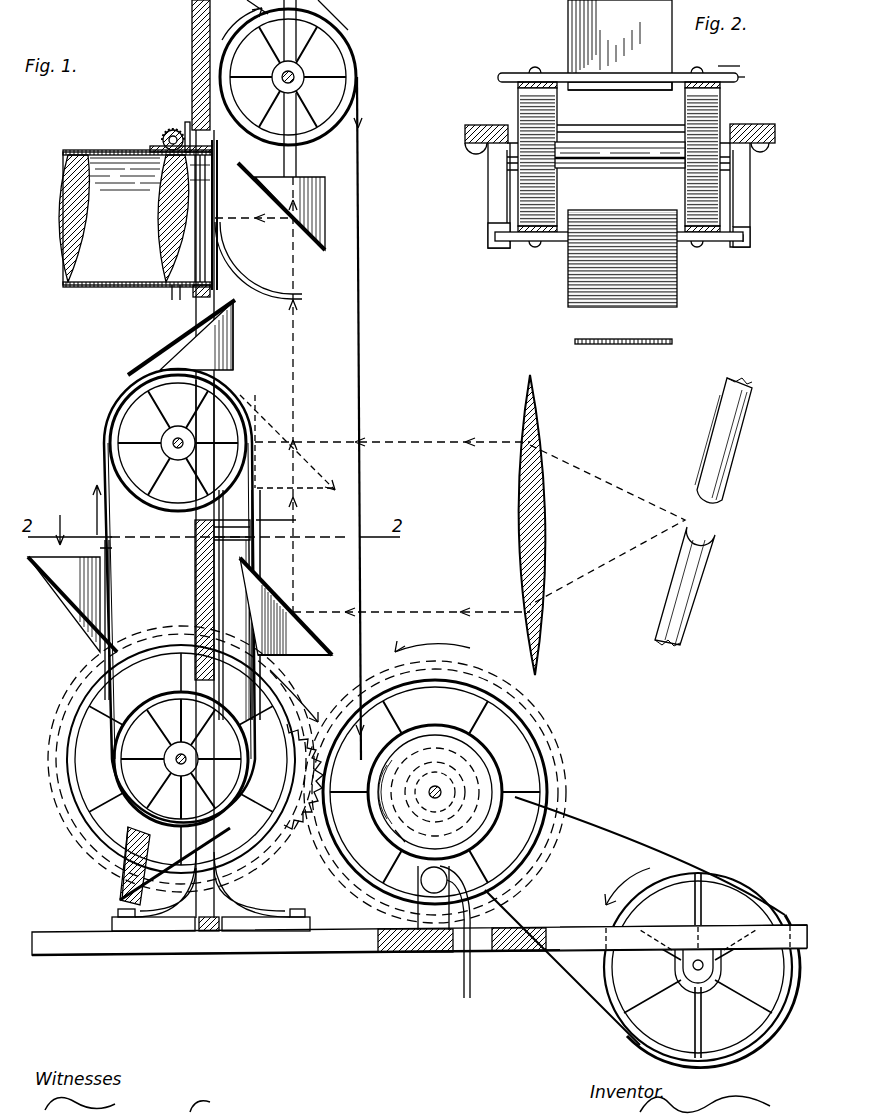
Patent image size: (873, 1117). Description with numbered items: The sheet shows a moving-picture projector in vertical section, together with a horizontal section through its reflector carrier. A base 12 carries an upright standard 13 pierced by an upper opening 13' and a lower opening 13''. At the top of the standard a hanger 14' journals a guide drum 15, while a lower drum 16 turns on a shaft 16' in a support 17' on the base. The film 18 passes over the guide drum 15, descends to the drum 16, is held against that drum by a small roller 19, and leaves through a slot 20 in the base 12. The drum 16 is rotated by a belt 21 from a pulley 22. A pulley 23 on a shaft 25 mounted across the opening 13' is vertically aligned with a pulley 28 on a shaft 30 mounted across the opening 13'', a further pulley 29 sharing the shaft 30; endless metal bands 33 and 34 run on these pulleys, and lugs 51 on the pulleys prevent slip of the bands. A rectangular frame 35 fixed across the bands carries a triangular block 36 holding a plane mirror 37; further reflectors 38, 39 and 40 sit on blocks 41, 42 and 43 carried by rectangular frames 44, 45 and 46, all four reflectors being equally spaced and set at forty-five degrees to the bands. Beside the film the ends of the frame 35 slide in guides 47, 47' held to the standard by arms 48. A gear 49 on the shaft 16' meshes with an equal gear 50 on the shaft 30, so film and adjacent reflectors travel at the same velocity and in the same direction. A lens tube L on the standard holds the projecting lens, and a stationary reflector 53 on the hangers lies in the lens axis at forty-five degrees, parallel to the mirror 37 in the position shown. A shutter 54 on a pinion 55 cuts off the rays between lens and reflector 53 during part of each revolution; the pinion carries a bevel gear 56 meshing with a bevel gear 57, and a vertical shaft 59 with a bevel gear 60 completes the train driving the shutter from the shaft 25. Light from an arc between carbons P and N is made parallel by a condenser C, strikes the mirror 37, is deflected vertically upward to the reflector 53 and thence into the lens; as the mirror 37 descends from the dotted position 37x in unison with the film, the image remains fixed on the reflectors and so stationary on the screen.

In FIG. 1, the base 12 is at (258, 945).
In FIG. 1, the standard 13 is at (200, 465).
In FIG. 1, the opening 13' is at (232, 433).
In FIG. 1, the opening 13'' is at (181, 759).
In FIG. 1, the hanger 14' is at (276, 149).
In FIG. 1, the guide drum 15 is at (340, 100).
In FIG. 1, the drum 16 is at (435, 782).
In FIG. 1, the shaft of drum 16' is at (435, 792).
In FIG. 1, the support 17' is at (471, 869).
In FIG. 1, the film 18 is at (362, 400).
In FIG. 2, the film 18 is at (640, 345).
In FIG. 1, the small roller 19 is at (420, 886).
In FIG. 1, the slot 20 is at (480, 948).
In FIG. 1, the belt 21 is at (630, 838).
In FIG. 1, the pulley 22 is at (745, 880).
In FIG. 1, the pulley 23 is at (160, 505).
In FIG. 1, the shaft 25 is at (172, 443).
In FIG. 1, the pulley 28 is at (150, 712).
In FIG. 2, the pulley 28 is at (545, 122).
In FIG. 2, the pulley 29 is at (690, 100).
In FIG. 1, the shaft 30 is at (187, 764).
In FIG. 2, the shaft 30 is at (630, 165).
In FIG. 2, the flexible band 33 is at (500, 80).
In FIG. 1, the flexible band 34 is at (108, 545).
In FIG. 2, the flexible band 34 is at (740, 80).
In FIG. 1, the rectangular frame 35 is at (240, 605).
In FIG. 2, the rectangular frame 35 is at (560, 240).
In FIG. 1, the triangular block 36 is at (300, 650).
In FIG. 1, the plane reflector 37 is at (300, 625).
In FIG. 2, the plane reflector 37 is at (622, 258).
In FIG. 1, the dotted-line position of reflector 37x is at (293, 445).
In FIG. 1, the reflector 38 is at (196, 336).
In FIG. 1, the reflector 39 is at (62, 585).
In FIG. 2, the reflector 39 is at (620, 84).
In FIG. 1, the reflector 40 is at (175, 866).
In FIG. 1, the block 41 is at (235, 330).
In FIG. 1, the block 42 is at (64, 604).
In FIG. 2, the block 42 is at (575, 22).
In FIG. 1, the block 43 is at (128, 880).
In FIG. 1, the rectangular frame 44 is at (135, 373).
In FIG. 1, the rectangular frame 45 is at (110, 620).
In FIG. 2, the rectangular frame 45 is at (735, 68).
In FIG. 1, the rectangular frame 46 is at (150, 772).
In FIG. 2, the guide 47 is at (490, 256).
In FIG. 1, the guide 47' is at (291, 538).
In FIG. 2, the guide 47' is at (749, 257).
In FIG. 1, the arm 48 is at (256, 525).
In FIG. 2, the arm 48 is at (492, 182).
In FIG. 1, the gear 49 is at (385, 832).
In FIG. 1, the gear 50 is at (285, 812).
In FIG. 1, the lug 51 is at (104, 447).
In FIG. 1, the stationary reflector 53 is at (290, 200).
In FIG. 1, the shutter 54 is at (218, 240).
In FIG. 1, the pinion 55 is at (190, 112).
In FIG. 1, the bevel gear 56 is at (177, 128).
In FIG. 1, the bevel gear 57 is at (170, 130).
In FIG. 1, the vertical shaft 59 is at (175, 292).
In FIG. 1, the bevel gear 60 is at (148, 148).
In FIG. 1, the lens tube L is at (135, 218).
In FIG. 1, the condenser C is at (540, 550).
In FIG. 1, the carbon P is at (725, 478).
In FIG. 1, the carbon N is at (690, 600).